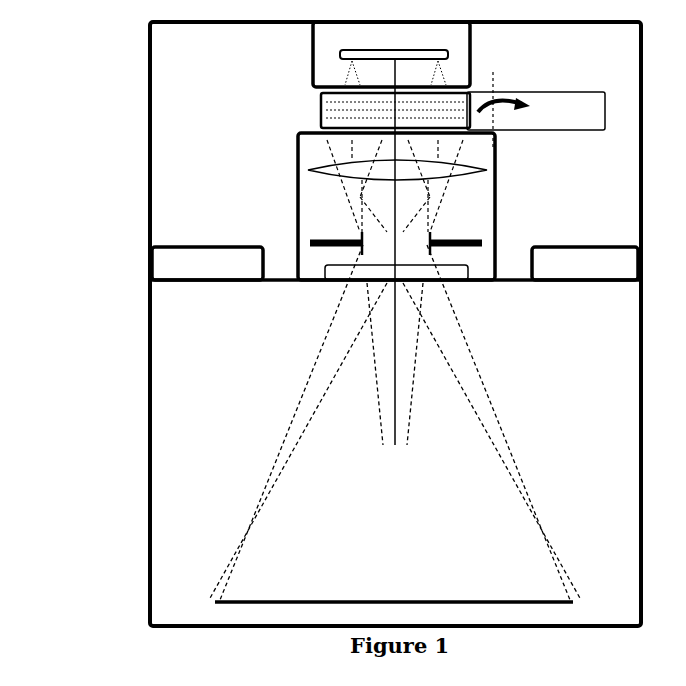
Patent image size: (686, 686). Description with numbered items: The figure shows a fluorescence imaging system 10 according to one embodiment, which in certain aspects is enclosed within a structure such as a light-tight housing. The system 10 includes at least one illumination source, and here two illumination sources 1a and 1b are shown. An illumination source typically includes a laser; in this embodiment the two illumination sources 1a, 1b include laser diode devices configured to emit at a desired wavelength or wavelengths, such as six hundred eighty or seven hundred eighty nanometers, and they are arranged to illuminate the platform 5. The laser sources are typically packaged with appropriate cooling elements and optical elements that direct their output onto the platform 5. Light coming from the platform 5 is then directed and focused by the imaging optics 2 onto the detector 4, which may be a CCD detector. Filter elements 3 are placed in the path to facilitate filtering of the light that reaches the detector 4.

The fluorescence imaging system 10 is at (113, 292).
The detector 4 is at (304, 57).
The filter elements 3 is at (318, 108).
The imaging optics 2 is at (296, 208).
The illumination source 1a is at (207, 263).
The illumination source 1b is at (585, 263).
The platform 5 is at (408, 603).